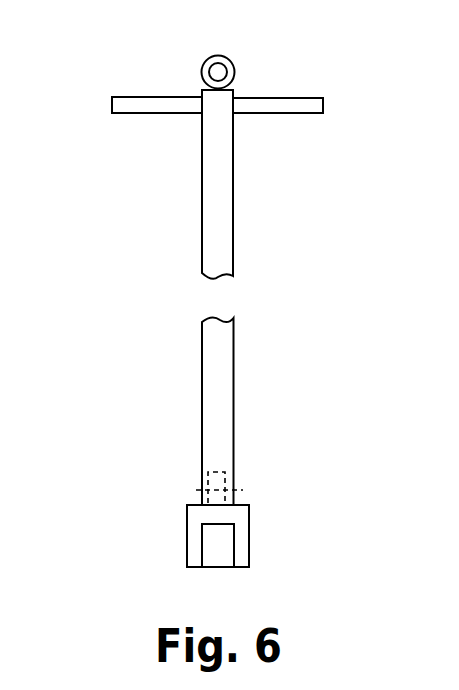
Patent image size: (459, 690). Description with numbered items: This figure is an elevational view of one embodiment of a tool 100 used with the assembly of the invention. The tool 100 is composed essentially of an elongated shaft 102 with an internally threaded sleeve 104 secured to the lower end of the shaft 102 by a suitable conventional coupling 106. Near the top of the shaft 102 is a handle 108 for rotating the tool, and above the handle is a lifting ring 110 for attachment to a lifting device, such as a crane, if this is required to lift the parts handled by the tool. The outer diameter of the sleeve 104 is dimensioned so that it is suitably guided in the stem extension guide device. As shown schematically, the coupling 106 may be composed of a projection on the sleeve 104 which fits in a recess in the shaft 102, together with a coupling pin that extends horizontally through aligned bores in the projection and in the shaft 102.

The tool 100 is at (70, 249).
The elongated shaft 102 is at (235, 407).
The internally threaded sleeve 104 is at (249, 542).
The coupling 106 is at (205, 490).
The handle 108 is at (152, 102).
The lifting ring 110 is at (235, 65).